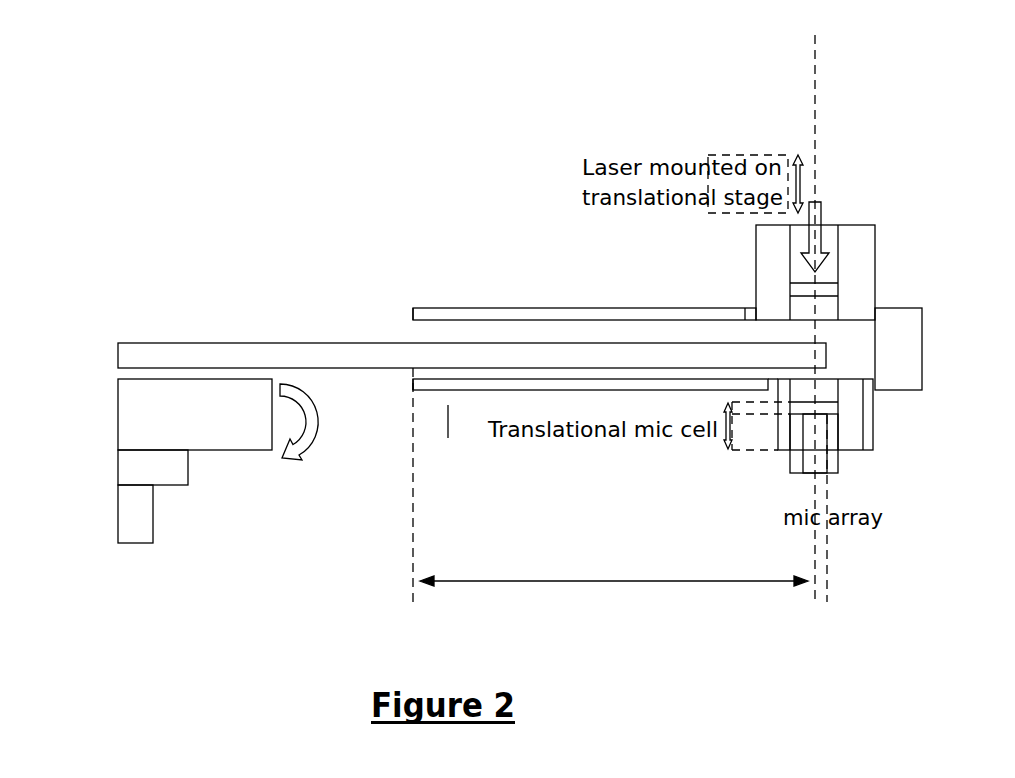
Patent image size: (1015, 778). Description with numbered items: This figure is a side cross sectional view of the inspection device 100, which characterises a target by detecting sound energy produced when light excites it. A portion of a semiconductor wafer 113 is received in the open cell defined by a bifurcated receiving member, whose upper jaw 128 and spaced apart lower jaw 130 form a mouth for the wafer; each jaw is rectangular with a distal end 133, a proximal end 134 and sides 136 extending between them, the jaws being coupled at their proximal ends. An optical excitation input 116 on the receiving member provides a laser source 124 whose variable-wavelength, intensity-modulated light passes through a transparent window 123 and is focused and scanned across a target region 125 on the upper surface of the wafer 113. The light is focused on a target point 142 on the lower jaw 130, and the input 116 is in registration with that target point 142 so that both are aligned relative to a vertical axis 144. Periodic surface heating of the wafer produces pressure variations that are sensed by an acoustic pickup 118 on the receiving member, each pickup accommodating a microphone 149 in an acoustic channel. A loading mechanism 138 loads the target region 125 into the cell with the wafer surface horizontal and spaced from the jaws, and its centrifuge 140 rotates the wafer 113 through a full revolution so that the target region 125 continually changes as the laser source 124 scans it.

The inspection device 100 is at (862, 60).
The semiconductor wafer 113 is at (200, 355).
The optical excitation input 116 is at (826, 225).
The acoustic pickup 118 is at (815, 425).
The transparent window 123 is at (790, 283).
The laser source 124 is at (815, 248).
The target region 125 is at (610, 485).
The upper jaw 128 is at (460, 306).
The lower jaw 130 is at (462, 438).
The distal end 133 is at (413, 317).
The proximal end 134 is at (887, 307).
The sides 136 is at (553, 306).
The loading mechanism 138 is at (142, 475).
The centrifuge 140 is at (153, 440).
The target point 142 is at (815, 379).
The vertical axis 144 is at (805, 83).
The microphone 149 is at (815, 462).